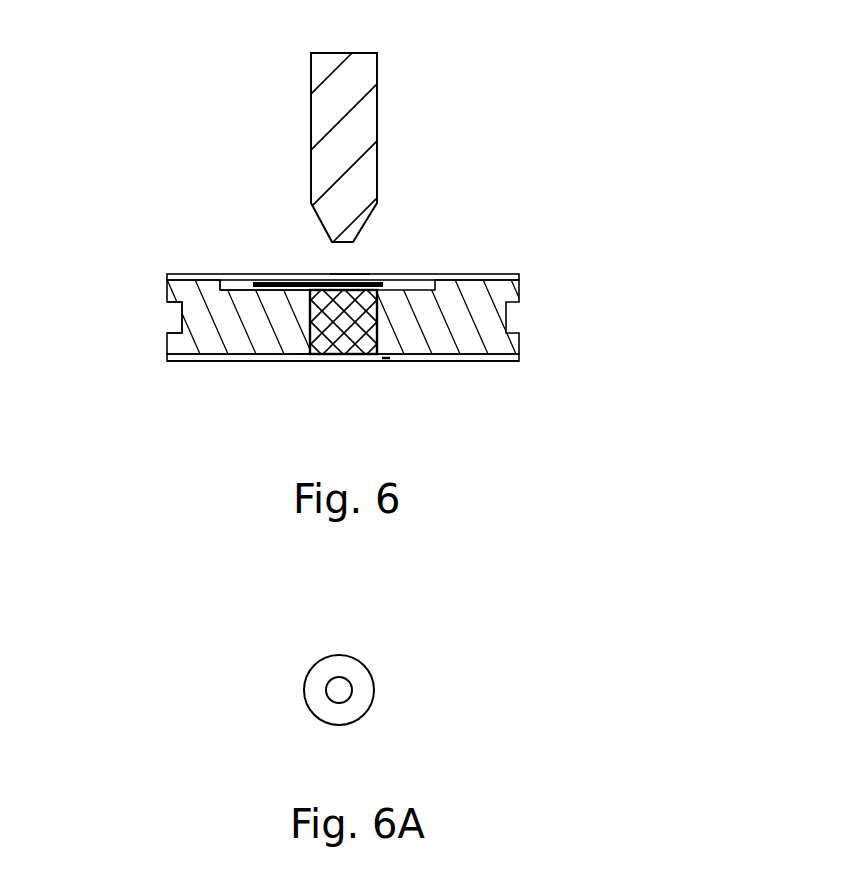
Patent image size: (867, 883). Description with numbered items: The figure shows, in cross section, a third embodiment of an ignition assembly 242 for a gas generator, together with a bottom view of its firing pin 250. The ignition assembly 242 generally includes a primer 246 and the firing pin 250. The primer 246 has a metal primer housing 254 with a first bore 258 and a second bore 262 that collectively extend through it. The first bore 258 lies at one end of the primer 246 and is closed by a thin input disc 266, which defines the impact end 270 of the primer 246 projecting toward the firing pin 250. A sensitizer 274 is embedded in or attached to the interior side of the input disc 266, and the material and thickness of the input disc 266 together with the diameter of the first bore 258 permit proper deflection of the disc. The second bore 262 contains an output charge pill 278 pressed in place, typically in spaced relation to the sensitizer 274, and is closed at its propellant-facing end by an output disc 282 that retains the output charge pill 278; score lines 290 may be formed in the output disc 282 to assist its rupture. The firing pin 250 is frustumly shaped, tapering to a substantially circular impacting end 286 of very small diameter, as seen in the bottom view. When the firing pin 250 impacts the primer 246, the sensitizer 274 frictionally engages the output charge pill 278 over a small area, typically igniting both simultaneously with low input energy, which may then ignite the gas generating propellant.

In FIG. 6, the firing pin 250 is at (377, 72).
In FIG. 6A, the firing pin 250 is at (374, 672).
In FIG. 6, the ignition assembly 242 is at (548, 142).
In FIG. 6, the impacting end 286 is at (342, 245).
In FIG. 6A, the impacting end 286 is at (340, 690).
In FIG. 6, the input disc 266 is at (512, 273).
In FIG. 6, the primer 246 is at (521, 287).
In FIG. 6, the first bore 258 is at (240, 283).
In FIG. 6, the sensitizer 274 is at (311, 284).
In FIG. 6, the impact end 270 is at (351, 271).
In FIG. 6, the primer housing 254 is at (167, 335).
In FIG. 6, the output disc 282 is at (514, 361).
In FIG. 6, the output charge pill 278 is at (363, 353).
In FIG. 6, the score lines 290 is at (307, 355).
In FIG. 6, the second bore 262 is at (301, 348).